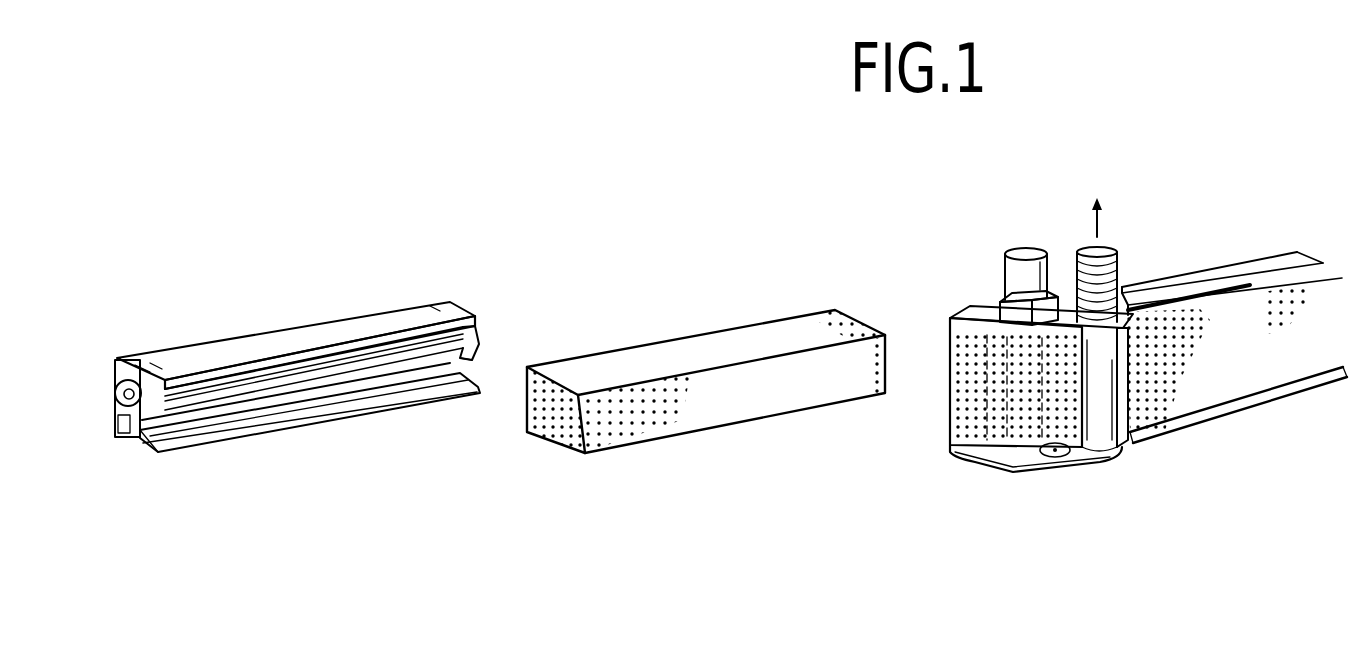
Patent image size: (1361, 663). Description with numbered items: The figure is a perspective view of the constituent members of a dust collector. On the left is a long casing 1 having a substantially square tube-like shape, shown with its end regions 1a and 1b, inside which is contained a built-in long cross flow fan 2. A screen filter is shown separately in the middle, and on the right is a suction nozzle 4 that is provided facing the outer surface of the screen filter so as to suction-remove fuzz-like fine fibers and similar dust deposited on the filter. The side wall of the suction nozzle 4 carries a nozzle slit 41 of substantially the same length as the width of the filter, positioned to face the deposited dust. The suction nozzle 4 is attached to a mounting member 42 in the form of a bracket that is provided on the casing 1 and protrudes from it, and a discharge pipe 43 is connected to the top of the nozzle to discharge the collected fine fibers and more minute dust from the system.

The long casing 1 is at (272, 340).
The lip of rail 1a is at (470, 357).
The bottom flange of rail 1b is at (127, 443).
The long cross flow fan 2 is at (217, 390).
The suction nozzle 4 is at (1107, 380).
The nozzle slit 41 is at (1120, 443).
The mounting member 42 is at (1077, 470).
The discharge pipe 43 is at (1123, 262).